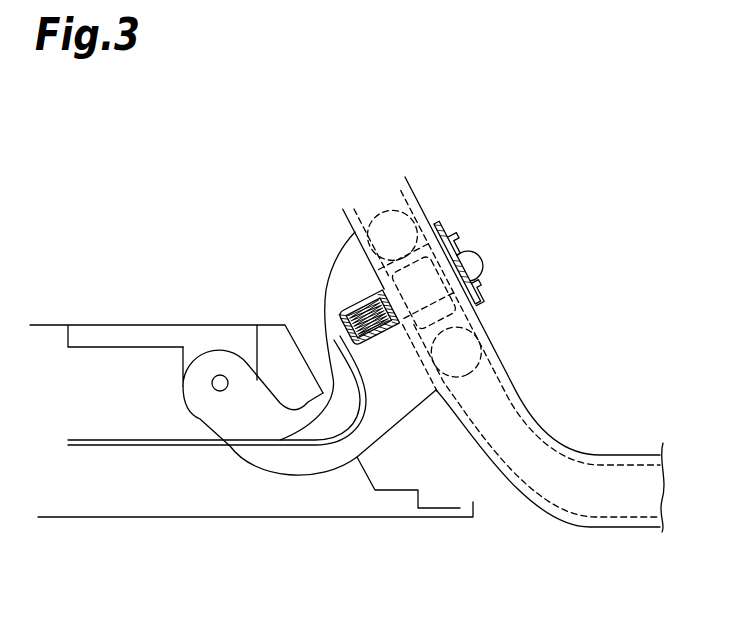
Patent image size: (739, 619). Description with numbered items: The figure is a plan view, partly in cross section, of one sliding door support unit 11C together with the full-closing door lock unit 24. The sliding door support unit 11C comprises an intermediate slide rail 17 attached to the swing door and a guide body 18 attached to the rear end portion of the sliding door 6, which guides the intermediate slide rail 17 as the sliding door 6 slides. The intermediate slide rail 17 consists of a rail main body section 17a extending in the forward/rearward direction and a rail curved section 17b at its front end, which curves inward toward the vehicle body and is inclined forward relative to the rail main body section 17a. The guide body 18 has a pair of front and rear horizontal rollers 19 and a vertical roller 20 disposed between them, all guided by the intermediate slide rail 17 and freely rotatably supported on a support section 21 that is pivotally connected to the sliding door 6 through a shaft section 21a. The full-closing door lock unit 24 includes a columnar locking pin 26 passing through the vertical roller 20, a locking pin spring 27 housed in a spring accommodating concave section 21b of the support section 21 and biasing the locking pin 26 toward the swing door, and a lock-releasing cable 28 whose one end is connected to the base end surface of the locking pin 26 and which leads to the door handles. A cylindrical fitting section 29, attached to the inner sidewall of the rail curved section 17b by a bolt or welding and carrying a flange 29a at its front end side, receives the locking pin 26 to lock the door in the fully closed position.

The sliding door 6 is at (130, 492).
The sliding door support unit 11C is at (530, 190).
The intermediate slide rail 17 is at (700, 370).
The rail main body section 17a is at (638, 452).
The rail curved section 17b is at (494, 350).
The guide body 18 is at (324, 287).
The horizontal rollers 19 is at (383, 208).
The vertical roller 20 is at (436, 236).
The support section 21 is at (303, 465).
The shaft section 21a is at (220, 374).
The spring accommodating concave section 21b is at (350, 302).
The full-closing door lock unit 24 is at (488, 242).
The locking pin 26 is at (470, 266).
The locking pin spring 27 is at (365, 345).
The lock-releasing cable 28 is at (102, 440).
The fitting section 29 is at (447, 232).
The flange 29a is at (481, 292).